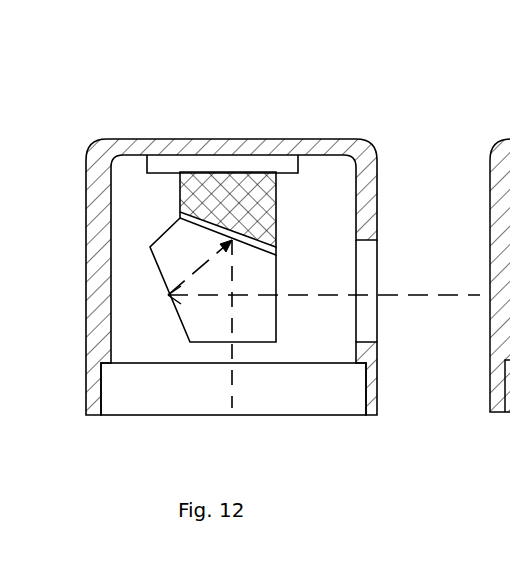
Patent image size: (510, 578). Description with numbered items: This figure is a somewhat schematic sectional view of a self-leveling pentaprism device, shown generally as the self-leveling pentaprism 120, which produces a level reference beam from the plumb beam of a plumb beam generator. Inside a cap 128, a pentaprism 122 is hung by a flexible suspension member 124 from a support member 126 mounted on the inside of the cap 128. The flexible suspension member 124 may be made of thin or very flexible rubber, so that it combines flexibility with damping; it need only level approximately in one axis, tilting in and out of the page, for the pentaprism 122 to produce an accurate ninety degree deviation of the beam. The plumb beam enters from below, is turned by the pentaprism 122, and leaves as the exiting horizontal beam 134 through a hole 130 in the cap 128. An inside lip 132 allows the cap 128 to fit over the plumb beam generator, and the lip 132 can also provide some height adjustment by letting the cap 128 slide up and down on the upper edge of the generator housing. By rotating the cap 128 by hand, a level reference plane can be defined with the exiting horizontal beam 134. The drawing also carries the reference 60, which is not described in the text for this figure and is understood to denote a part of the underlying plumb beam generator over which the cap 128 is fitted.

The self-leveling pentaprism 120 is at (98, 79).
The pentaprism 122 is at (165, 232).
The flexible suspension member 124 is at (234, 123).
The support member 126 is at (253, 172).
The cap 128 is at (378, 199).
The hole 130 is at (370, 341).
The inside lip 132 is at (366, 399).
The center axis 60 is at (233, 370).
The exiting horizontal beam 134 is at (417, 294).